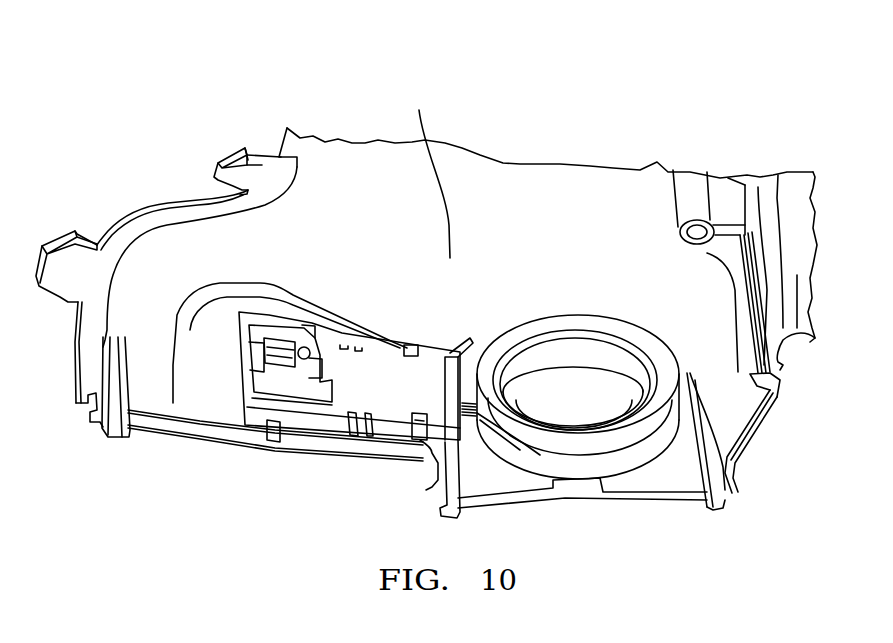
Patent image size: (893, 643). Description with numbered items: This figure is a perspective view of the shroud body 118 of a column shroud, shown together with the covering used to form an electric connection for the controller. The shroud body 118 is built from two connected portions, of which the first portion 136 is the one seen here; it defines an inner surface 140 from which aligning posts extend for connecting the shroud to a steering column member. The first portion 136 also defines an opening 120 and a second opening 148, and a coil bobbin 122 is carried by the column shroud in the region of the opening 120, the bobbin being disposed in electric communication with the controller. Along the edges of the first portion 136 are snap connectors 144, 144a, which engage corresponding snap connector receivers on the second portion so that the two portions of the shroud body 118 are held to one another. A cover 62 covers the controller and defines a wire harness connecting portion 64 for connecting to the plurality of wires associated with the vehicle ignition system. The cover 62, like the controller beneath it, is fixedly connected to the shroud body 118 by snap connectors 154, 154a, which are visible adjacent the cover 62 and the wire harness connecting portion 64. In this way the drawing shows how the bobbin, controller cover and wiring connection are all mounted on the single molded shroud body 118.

The shroud body 118 is at (262, 118).
The first portion 136 is at (557, 162).
The inner surface 140 is at (419, 110).
The second opening 148 is at (800, 242).
The wire harness connecting portion 64 is at (276, 332).
The snap connector 154a is at (410, 345).
The cover 62 is at (328, 420).
The snap connector 154 is at (421, 440).
The coil bobbin 122 is at (622, 436).
The opening 120 is at (557, 433).
The snap connector 144 is at (724, 502).
The snap connector 144a is at (780, 382).